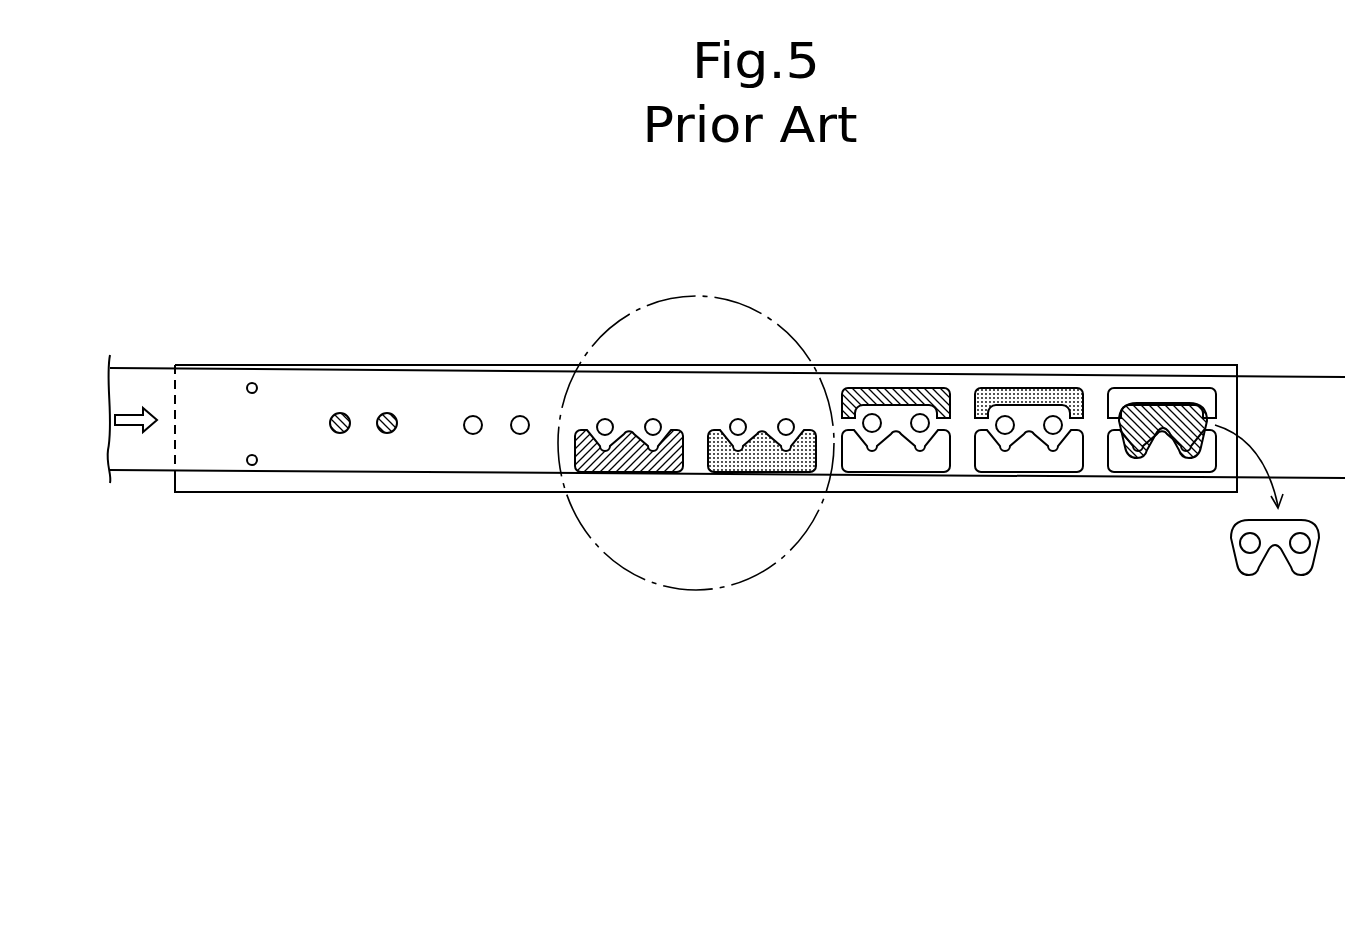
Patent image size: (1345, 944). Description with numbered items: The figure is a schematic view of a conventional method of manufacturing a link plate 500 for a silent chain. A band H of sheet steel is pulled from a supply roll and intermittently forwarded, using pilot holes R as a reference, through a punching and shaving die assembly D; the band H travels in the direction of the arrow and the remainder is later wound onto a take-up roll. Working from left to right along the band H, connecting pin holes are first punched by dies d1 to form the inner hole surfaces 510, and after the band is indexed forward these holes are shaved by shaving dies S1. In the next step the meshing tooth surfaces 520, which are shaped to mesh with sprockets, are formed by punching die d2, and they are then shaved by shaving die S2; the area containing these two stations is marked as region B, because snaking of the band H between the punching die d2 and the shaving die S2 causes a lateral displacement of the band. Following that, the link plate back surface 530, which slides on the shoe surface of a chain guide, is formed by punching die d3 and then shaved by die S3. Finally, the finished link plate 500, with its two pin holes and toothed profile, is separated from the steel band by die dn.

The band H is at (137, 478).
The die assembly D is at (198, 497).
The pilot holes R is at (252, 383).
The dies d1 is at (387, 413).
The shaving dies S1 is at (473, 416).
The region B is at (701, 408).
The punching die d2 is at (629, 432).
The shaving die S2 is at (763, 437).
The inner hole surfaces 510 is at (648, 474).
The punching die d3 is at (898, 388).
The meshing tooth surfaces 520 is at (919, 452).
The link plate back surface 530 is at (1013, 408).
The shaving die S3 is at (1056, 391).
The die dn is at (1163, 404).
The link plate 500 is at (1230, 558).